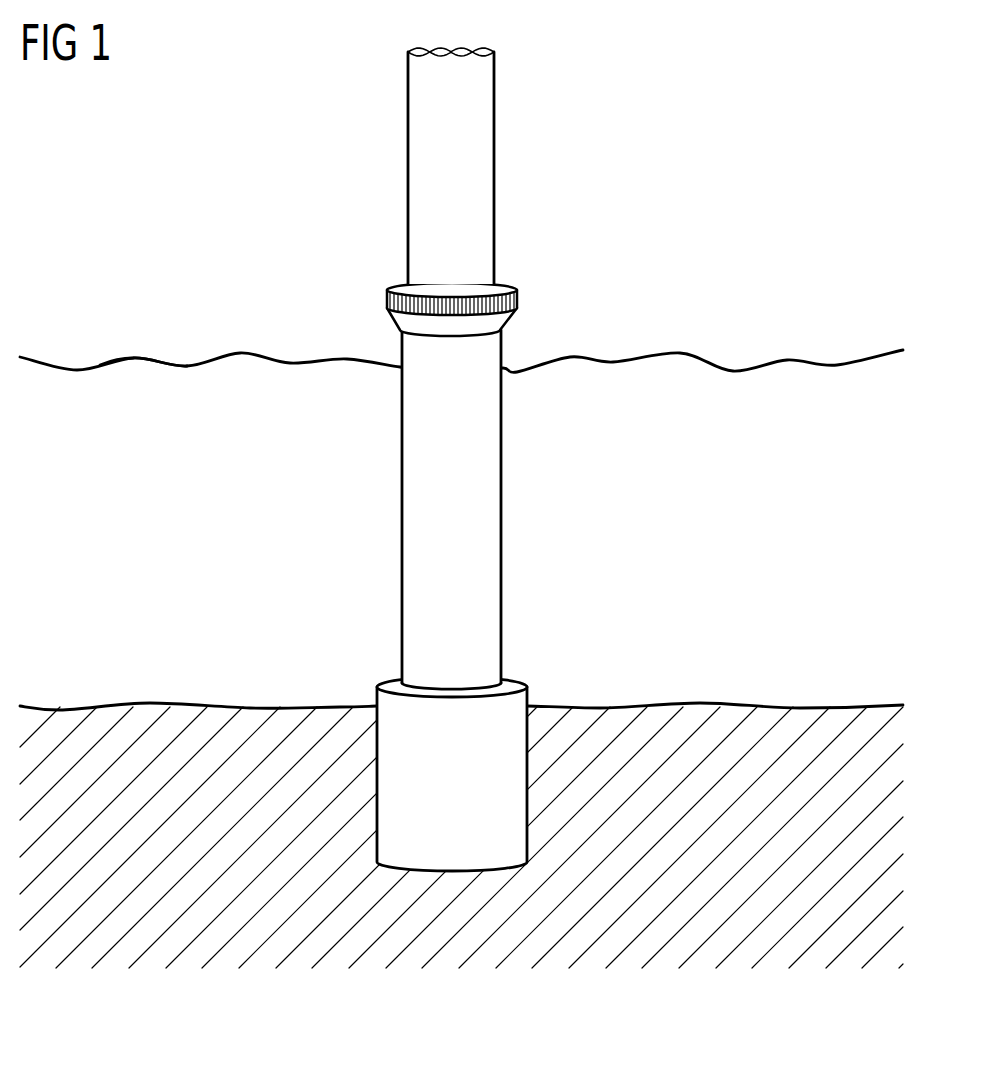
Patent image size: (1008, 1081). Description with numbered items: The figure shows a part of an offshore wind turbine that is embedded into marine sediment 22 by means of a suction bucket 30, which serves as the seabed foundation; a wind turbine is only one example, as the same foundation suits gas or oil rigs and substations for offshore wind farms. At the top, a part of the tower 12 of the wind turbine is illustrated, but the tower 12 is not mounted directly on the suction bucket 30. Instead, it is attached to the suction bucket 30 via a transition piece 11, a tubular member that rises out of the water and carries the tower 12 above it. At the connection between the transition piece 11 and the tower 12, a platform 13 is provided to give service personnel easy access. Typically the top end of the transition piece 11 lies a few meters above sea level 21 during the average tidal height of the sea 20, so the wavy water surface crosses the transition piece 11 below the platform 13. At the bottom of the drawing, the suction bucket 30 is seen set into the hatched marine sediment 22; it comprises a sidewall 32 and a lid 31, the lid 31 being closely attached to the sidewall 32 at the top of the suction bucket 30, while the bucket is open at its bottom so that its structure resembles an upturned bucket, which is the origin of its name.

The transition piece 11 is at (490, 496).
The tower 12 is at (484, 146).
The platform 13 is at (497, 320).
The sea 20 is at (250, 364).
The sea level 21 is at (133, 357).
The marine sediment 22 is at (152, 712).
The suction bucket 30 is at (450, 726).
The lid 31 is at (513, 678).
The sidewall 32 is at (515, 785).